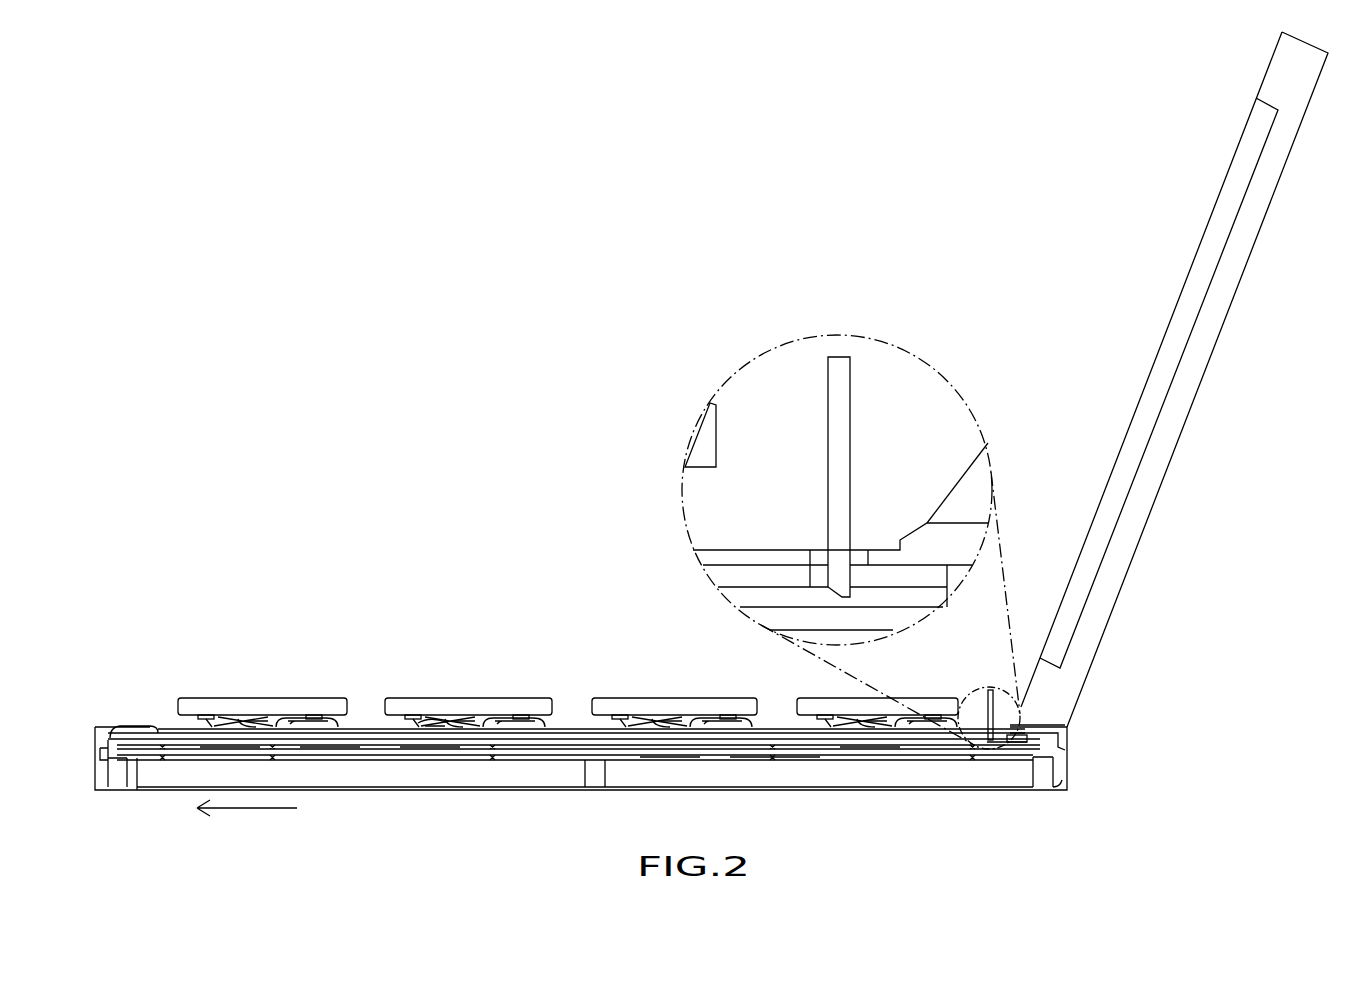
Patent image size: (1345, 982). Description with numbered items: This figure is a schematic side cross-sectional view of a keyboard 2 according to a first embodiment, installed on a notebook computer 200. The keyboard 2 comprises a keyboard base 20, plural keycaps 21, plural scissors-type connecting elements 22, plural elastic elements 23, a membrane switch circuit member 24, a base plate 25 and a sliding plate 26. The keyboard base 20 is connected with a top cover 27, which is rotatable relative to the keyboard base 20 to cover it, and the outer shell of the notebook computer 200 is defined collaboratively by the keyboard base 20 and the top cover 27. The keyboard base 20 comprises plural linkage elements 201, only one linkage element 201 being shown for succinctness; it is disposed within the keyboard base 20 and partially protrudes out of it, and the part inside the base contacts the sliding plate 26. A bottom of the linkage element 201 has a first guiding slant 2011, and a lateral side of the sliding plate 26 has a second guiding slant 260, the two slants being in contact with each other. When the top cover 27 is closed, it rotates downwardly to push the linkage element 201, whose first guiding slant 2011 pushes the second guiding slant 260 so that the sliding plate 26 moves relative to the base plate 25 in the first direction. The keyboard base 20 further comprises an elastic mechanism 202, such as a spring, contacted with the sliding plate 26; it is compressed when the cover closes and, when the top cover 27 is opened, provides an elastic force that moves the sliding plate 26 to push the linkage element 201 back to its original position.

The notebook computer 200 is at (403, 383).
The keyboard 2 is at (259, 681).
The keyboard base 20 is at (95, 745).
The elastic mechanism 202 is at (130, 737).
The keycap 21 is at (540, 707).
The scissors-type connecting element 22 is at (470, 718).
The elastic element 23 is at (450, 723).
The membrane switch circuit member 24 is at (712, 557).
The base plate 25 is at (726, 575).
The sliding plate 26 is at (766, 598).
The second guiding slant 260 is at (870, 600).
The linkage element 201 is at (838, 466).
The first guiding slant 2011 is at (832, 573).
The top cover 27 is at (1288, 88).